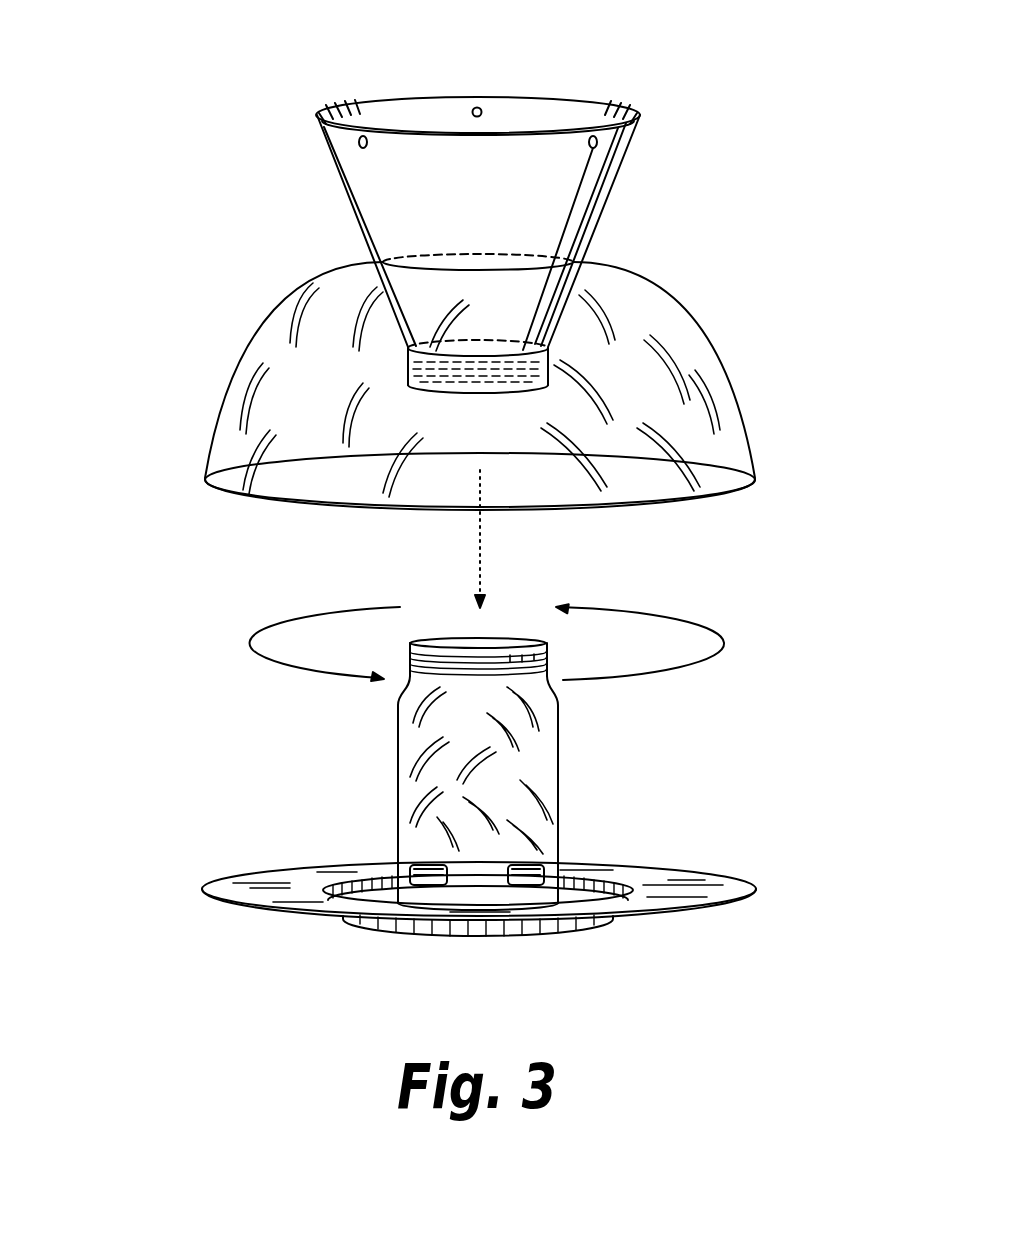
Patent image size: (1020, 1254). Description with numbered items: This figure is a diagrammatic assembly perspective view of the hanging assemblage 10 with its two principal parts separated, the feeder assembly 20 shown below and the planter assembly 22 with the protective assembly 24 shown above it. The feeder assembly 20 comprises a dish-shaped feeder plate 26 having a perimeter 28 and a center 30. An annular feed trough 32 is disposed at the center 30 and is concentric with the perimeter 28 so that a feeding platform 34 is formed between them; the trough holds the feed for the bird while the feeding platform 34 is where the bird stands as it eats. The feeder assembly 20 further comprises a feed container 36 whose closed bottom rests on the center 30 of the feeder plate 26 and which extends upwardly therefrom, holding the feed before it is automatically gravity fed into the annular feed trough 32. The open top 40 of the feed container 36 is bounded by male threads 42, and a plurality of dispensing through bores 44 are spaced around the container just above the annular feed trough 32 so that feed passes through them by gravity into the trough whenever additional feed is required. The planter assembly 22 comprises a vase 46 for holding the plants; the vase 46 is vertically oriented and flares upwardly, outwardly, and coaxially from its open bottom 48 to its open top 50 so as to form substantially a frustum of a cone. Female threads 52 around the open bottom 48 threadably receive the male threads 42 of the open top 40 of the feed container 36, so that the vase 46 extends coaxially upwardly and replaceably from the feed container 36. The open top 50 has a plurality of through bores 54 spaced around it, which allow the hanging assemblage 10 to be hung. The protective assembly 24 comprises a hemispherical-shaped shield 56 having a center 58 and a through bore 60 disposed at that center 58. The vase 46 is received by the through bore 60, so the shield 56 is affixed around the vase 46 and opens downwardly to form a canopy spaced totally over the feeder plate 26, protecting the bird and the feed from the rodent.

The hanging assemblage 10 is at (97, 288).
The feeder assembly 20 is at (289, 857).
The planter assembly 22 is at (316, 149).
The protective assembly 24 is at (279, 303).
The feeder plate 26 is at (235, 915).
The perimeter 28 is at (220, 877).
The center 30 is at (422, 932).
The annular feed trough 32 is at (377, 880).
The feeding platform 34 is at (675, 888).
The feed container 36 is at (570, 738).
The open top 40 is at (455, 652).
The male threads 42 is at (478, 663).
The dispensing through bores 44 is at (436, 864).
The vase 46 is at (348, 212).
The open bottom 48 is at (482, 358).
The open top 50 is at (388, 110).
The female threads 52 is at (478, 370).
The through bores 54 is at (482, 104).
The shield 56 is at (197, 455).
The center 58 is at (556, 362).
The through bore 60 is at (285, 506).